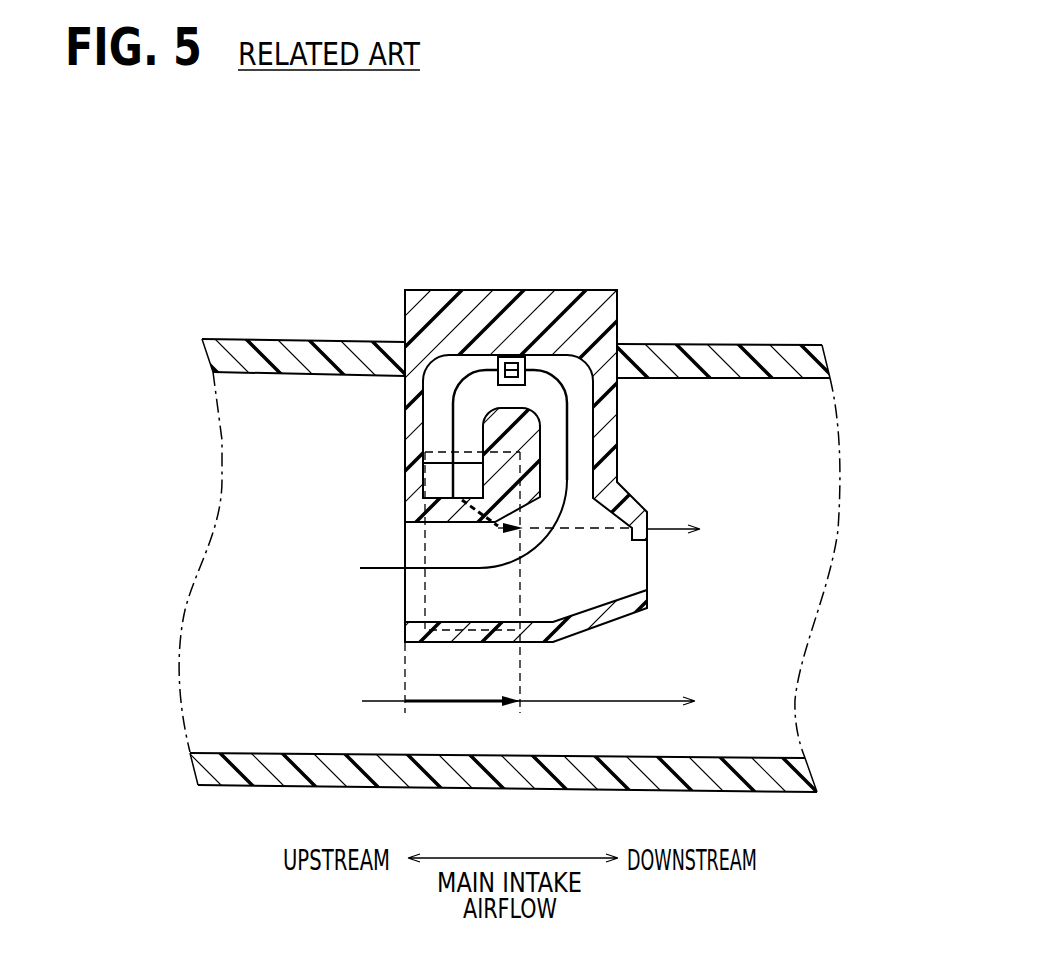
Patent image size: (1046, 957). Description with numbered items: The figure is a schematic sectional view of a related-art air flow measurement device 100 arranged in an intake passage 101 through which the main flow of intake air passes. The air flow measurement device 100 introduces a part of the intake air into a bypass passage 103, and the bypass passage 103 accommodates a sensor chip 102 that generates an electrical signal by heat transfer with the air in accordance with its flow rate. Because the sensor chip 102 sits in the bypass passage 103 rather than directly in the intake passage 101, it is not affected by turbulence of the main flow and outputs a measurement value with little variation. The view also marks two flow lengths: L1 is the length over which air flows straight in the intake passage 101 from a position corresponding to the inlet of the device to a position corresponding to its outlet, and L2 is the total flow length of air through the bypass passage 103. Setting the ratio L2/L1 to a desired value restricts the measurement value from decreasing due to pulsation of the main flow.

The air flow measurement device 100 is at (639, 246).
The intake passage 101 is at (193, 692).
The sensor chip 102 is at (512, 357).
The bypass passage 103 is at (437, 415).
The flow length of air flowing straight in the intake passage L1 is at (463, 705).
The flow length of air flowing in the bypass passage L2 is at (567, 445).